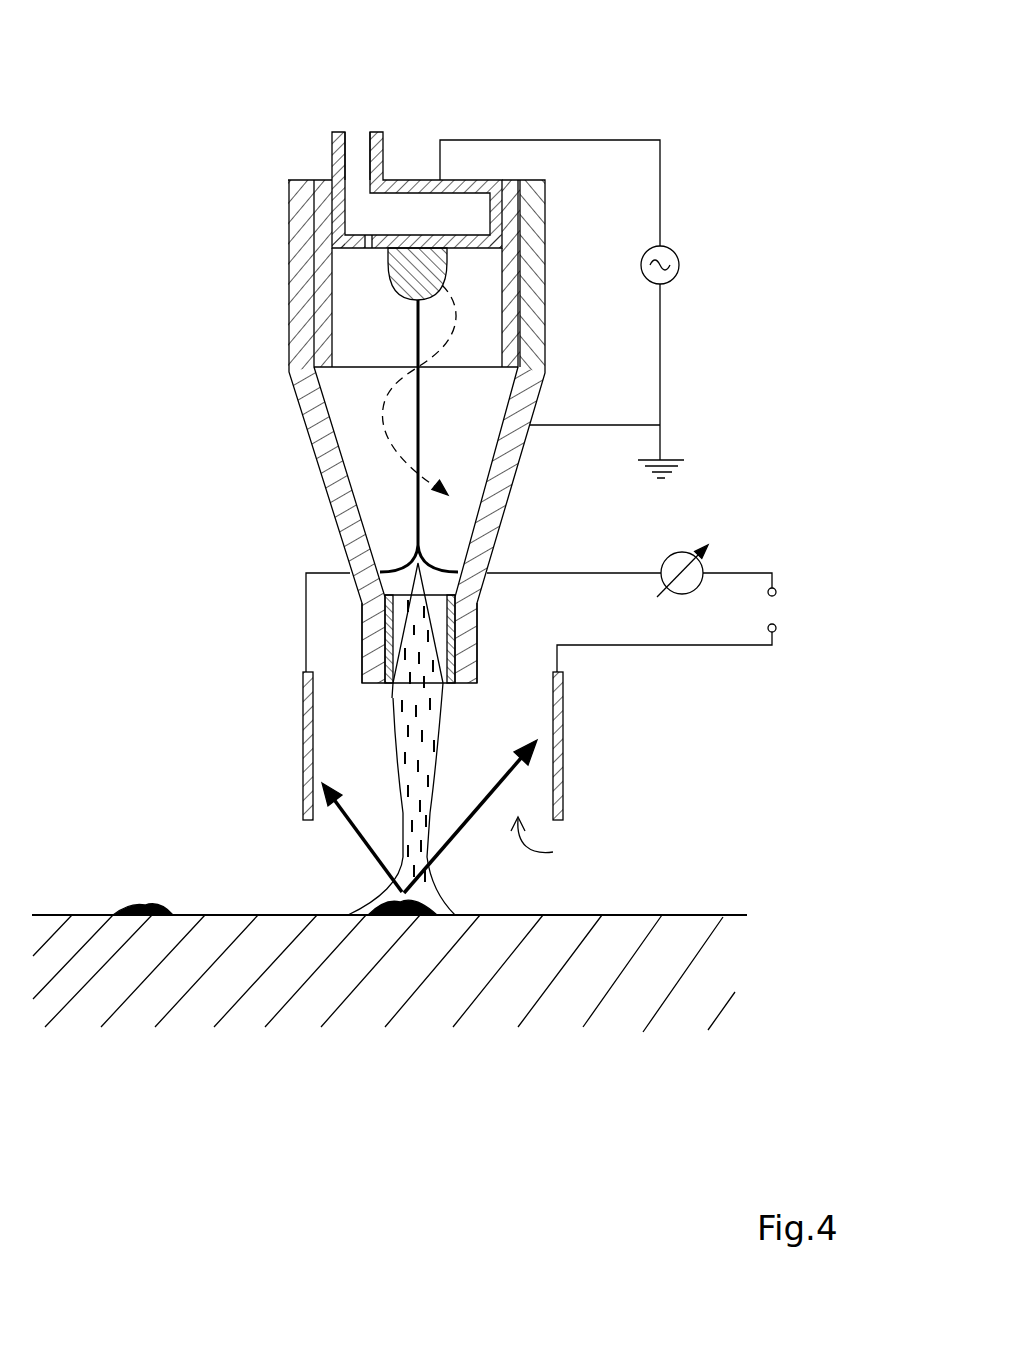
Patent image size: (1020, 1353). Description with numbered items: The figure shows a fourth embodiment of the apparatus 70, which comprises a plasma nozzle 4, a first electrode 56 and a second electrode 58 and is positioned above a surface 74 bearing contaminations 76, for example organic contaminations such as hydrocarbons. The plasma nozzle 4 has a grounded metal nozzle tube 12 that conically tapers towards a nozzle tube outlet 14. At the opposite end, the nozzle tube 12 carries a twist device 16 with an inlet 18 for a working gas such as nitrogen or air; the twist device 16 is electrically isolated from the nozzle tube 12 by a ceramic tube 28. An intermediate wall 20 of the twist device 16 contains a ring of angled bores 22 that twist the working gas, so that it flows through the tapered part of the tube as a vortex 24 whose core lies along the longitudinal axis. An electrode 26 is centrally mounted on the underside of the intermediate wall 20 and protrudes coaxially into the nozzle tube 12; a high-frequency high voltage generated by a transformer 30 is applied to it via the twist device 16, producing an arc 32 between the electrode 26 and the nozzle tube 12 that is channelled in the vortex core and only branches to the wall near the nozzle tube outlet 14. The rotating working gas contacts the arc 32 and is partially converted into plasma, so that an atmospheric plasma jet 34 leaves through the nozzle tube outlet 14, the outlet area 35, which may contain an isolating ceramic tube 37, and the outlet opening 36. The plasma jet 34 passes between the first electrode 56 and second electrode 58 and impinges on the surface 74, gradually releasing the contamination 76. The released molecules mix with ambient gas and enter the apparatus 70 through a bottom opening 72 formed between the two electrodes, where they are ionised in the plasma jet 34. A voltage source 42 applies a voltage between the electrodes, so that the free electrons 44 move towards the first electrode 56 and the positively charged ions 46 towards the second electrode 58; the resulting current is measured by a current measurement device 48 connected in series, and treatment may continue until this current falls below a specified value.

The apparatus 70 is at (172, 45).
The plasma nozzle 4 is at (290, 483).
The nozzle tube 12 is at (300, 348).
The nozzle tube outlet 14 is at (447, 614).
The twist device 16 is at (413, 160).
The inlet 18 is at (330, 147).
The intermediate wall 20 is at (400, 233).
The bores 22 is at (367, 250).
The vortex 24 is at (385, 398).
The electrode 26 is at (405, 275).
The ceramic tube 28 is at (508, 228).
The transformer 30 is at (678, 250).
The arc 32 is at (422, 415).
The atmospheric plasma jet 34 is at (427, 707).
The outlet area 35 is at (372, 631).
The outlet opening 36 is at (392, 697).
The isolating ceramic tube 37 is at (453, 645).
The voltage source 42 is at (790, 605).
The free electrons 44 is at (355, 830).
The positively charged ions 46 is at (494, 788).
The current measurement device 48 is at (682, 552).
The first electrode 56 is at (305, 700).
The second electrode 58 is at (558, 710).
The bottom opening 72 is at (554, 846).
The surface 74 is at (700, 907).
The contaminations 76 is at (425, 903).